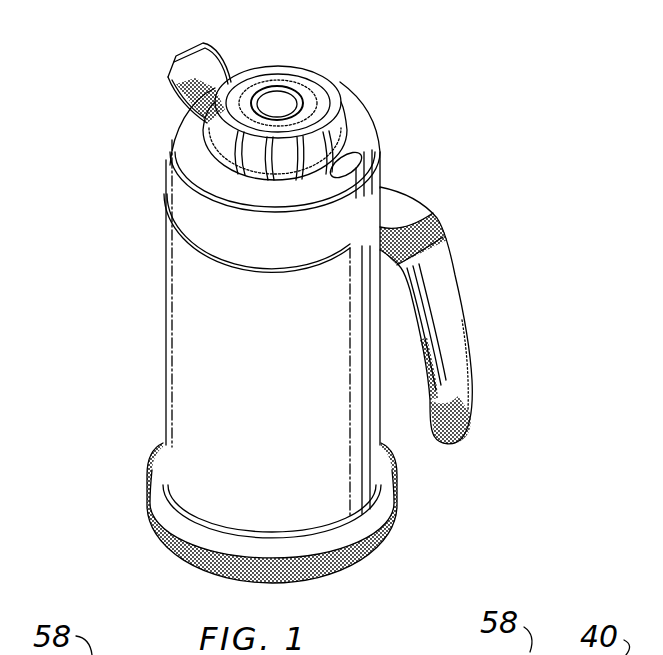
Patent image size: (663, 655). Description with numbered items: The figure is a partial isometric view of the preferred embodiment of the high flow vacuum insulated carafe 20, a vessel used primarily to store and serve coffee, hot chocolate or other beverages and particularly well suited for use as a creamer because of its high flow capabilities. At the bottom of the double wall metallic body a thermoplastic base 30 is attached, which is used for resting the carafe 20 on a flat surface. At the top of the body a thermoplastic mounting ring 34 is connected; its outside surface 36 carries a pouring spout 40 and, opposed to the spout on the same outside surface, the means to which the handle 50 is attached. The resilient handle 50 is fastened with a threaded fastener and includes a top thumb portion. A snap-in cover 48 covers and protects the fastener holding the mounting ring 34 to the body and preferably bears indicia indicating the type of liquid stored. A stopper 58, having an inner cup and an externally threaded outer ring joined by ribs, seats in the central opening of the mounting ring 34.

The vacuum insulated carafe 20 is at (152, 325).
The base 30 is at (148, 507).
The mounting ring 34 is at (355, 110).
The outside surface 36 is at (173, 200).
The pouring spout 40 is at (170, 58).
The snap-in cover 48 is at (370, 152).
The handle 50 is at (473, 354).
The stopper 58 is at (315, 40).